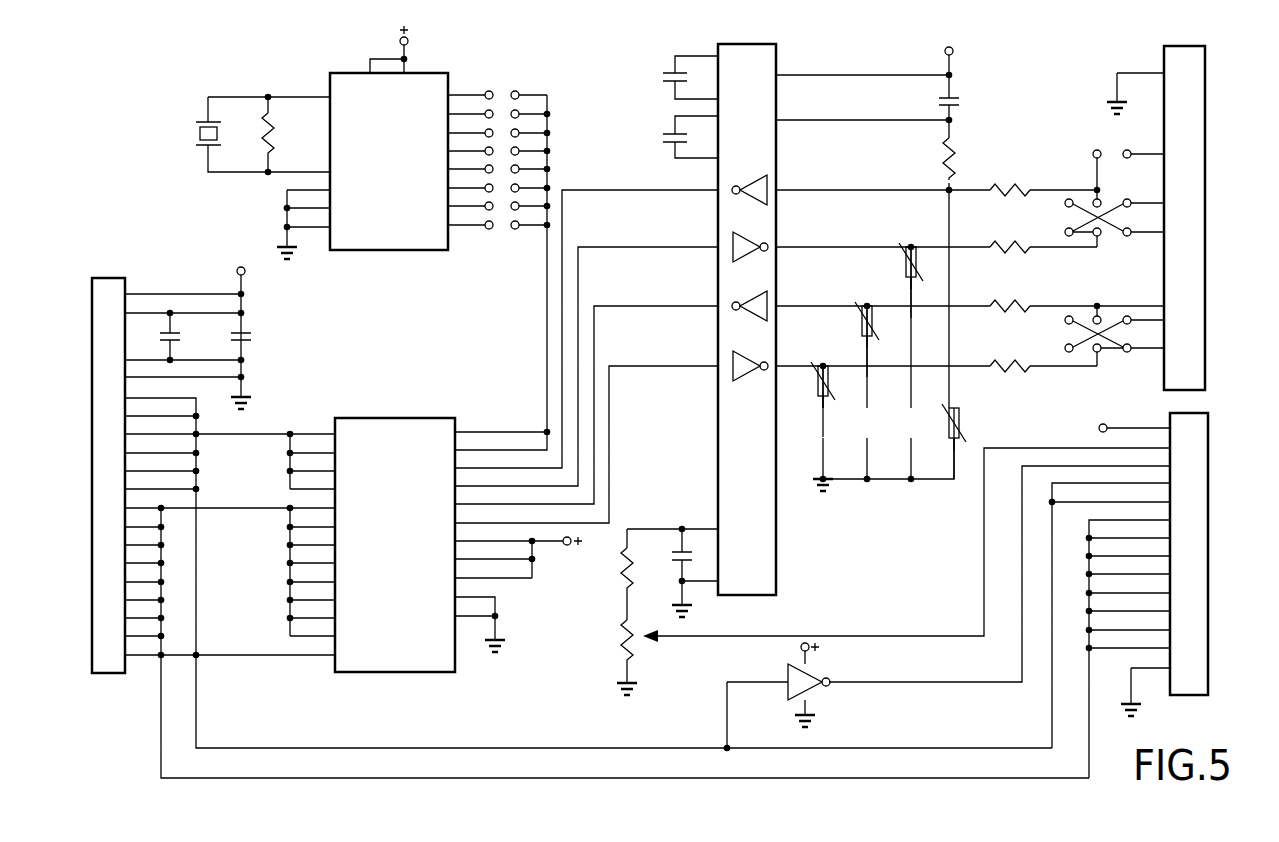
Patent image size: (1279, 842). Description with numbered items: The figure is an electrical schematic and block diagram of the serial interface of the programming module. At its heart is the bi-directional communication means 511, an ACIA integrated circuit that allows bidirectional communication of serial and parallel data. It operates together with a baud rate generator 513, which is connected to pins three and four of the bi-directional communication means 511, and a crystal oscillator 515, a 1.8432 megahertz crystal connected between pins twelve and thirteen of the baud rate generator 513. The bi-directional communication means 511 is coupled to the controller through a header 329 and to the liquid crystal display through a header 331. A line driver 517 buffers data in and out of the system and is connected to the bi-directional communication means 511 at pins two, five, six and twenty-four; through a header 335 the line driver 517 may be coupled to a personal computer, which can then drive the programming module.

The header 329 is at (105, 278).
The header 331 is at (1203, 555).
The header 335 is at (1200, 250).
The bi-directional communication means 511 is at (392, 420).
The baud rate generator 513 is at (348, 74).
The crystal oscillator 515 is at (190, 132).
The line driver 517 is at (766, 58).